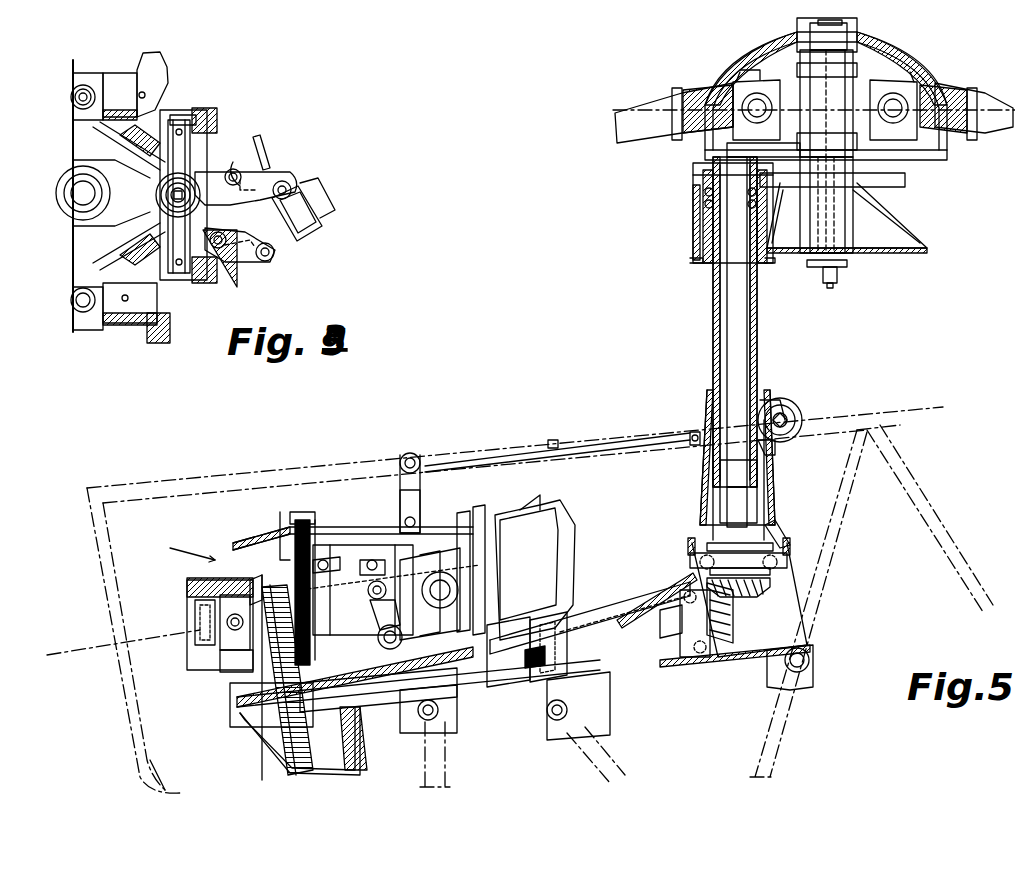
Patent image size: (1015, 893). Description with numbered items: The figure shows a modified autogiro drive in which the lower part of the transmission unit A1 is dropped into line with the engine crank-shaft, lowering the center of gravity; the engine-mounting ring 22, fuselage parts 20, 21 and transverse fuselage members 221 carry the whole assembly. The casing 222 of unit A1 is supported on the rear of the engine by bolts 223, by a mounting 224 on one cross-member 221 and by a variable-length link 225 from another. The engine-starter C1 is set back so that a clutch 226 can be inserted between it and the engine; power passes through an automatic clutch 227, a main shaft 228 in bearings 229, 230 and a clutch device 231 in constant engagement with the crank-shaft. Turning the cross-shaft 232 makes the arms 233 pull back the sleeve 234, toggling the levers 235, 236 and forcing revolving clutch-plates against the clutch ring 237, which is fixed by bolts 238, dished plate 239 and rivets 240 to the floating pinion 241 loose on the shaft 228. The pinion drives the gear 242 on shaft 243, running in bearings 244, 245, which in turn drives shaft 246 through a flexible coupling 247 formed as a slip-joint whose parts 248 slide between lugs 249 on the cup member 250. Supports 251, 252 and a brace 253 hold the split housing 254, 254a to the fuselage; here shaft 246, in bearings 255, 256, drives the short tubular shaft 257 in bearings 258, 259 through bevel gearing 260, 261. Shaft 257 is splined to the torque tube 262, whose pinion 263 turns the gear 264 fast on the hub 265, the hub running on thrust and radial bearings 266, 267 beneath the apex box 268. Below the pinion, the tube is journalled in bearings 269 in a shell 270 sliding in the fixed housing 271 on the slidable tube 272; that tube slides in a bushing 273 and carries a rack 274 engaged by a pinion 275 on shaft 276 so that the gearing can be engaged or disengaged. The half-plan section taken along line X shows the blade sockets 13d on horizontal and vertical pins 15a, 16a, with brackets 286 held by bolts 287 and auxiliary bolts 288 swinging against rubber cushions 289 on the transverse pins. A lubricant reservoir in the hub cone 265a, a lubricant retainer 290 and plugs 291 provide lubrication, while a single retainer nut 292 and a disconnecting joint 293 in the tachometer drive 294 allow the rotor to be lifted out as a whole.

In FIG. 5A, the blade sockets 13d is at (235, 167).
In FIG. 5, the blade sockets 13d is at (965, 100).
In FIG. 5A, the horizontal pins 15a is at (190, 115).
In FIG. 5, the horizontal pins 15a is at (730, 78).
In FIG. 5, the vertical pins 16a is at (752, 72).
In FIG. 5, the fuselage part 20 is at (945, 412).
In FIG. 5, the fuselage part 21 is at (605, 770).
In FIG. 5, the engine-mounting ring 22 is at (145, 762).
In FIG. 5, the transverse fuselage members 221 is at (413, 452).
In FIG. 5, the casing 222 is at (280, 540).
In FIG. 5, the bolts 223 is at (195, 580).
In FIG. 5, the mounting 224 is at (430, 722).
In FIG. 5, the variable-length link 225 is at (400, 492).
In FIG. 5, the clutch 226 is at (315, 560).
In FIG. 5, the automatic clutch 227 is at (465, 510).
In FIG. 5, the main shaft 228 is at (375, 560).
In FIG. 5, the bearing 229 is at (225, 630).
In FIG. 5, the bearing 230 is at (430, 556).
In FIG. 5, the clutch device 231 is at (195, 603).
In FIG. 5, the cross-shaft 232 is at (440, 608).
In FIG. 5, the arms 233 is at (374, 624).
In FIG. 5, the sleeve 234 is at (382, 594).
In FIG. 5, the lever 235 is at (325, 558).
In FIG. 5, the lever 236 is at (305, 512).
In FIG. 5, the clutch ring 237 is at (340, 640).
In FIG. 5, the bolts 238 is at (300, 520).
In FIG. 5, the dished plate 239 is at (262, 675).
In FIG. 5, the rivets 240 is at (233, 546).
In FIG. 5, the floating pinion 241 is at (245, 672).
In FIG. 5, the gear 242 is at (285, 765).
In FIG. 5, the shaft 243 is at (418, 677).
In FIG. 5, the bearing 244 is at (250, 727).
In FIG. 5, the bearing 245 is at (367, 740).
In FIG. 5, the shaft 246 is at (635, 590).
In FIG. 5, the flexible coupling 247 is at (538, 670).
In FIG. 5, the parts 248 is at (560, 620).
In FIG. 5, the lugs 249 is at (565, 625).
In FIG. 5, the cup member 250 is at (515, 680).
In FIG. 5, the support 251 is at (610, 700).
In FIG. 5, the support 252 is at (775, 685).
In FIG. 5, the brace 253 is at (568, 440).
In FIG. 5, the split housing 254 is at (690, 556).
In FIG. 5, the split housing 254a is at (708, 480).
In FIG. 5, the bearing 255 is at (640, 660).
In FIG. 5, the bearing 256 is at (700, 657).
In FIG. 5, the short tubular shaft 257 is at (760, 490).
In FIG. 5, the bearing 258 is at (775, 545).
In FIG. 5, the bearing 259 is at (720, 490).
In FIG. 5, the bevel gearing 260 is at (733, 638).
In FIG. 5, the bevel gearing 261 is at (770, 590).
In FIG. 5, the torque tube 262 is at (720, 275).
In FIG. 5, the pinion 263 is at (703, 172).
In FIG. 5, the gear 264 is at (905, 182).
In FIG. 5, the hub 265 is at (860, 165).
In FIG. 5, the hub cone 265a is at (857, 30).
In FIG. 5, the bearing 266 is at (855, 60).
In FIG. 5, the bearing 267 is at (855, 68).
In FIG. 5, the apex box 268 is at (905, 243).
In FIG. 5, the bearings 269 is at (703, 198).
In FIG. 5, the shell 270 is at (700, 220).
In FIG. 5, the fixed housing 271 is at (700, 242).
In FIG. 5, the slidable tube 272 is at (713, 300).
In FIG. 5, the bushing 273 is at (705, 385).
In FIG. 5, the rack 274 is at (778, 398).
In FIG. 5, the pinion 275 is at (798, 410).
In FIG. 5, the shaft 276 is at (787, 438).
In FIG. 5A, the brackets 286 is at (262, 140).
In FIG. 5A, the bolts 287 is at (295, 188).
In FIG. 5A, the auxiliary bolts 288 is at (233, 162).
In FIG. 5A, the rubber cushions 289 is at (213, 108).
In FIG. 5, the lubricant retainer 290 is at (814, 106).
In FIG. 5, the plugs 291 is at (727, 150).
In FIG. 5, the retainer nut 292 is at (850, 265).
In FIG. 5, the disconnecting joint 293 is at (840, 278).
In FIG. 5, the tachometer drive 294 is at (835, 288).
In FIG. 5, the unit A1 is at (176, 541).
In FIG. 5, the engine-starter C1 is at (535, 567).
In FIG. 5, the axis X is at (114, 642).